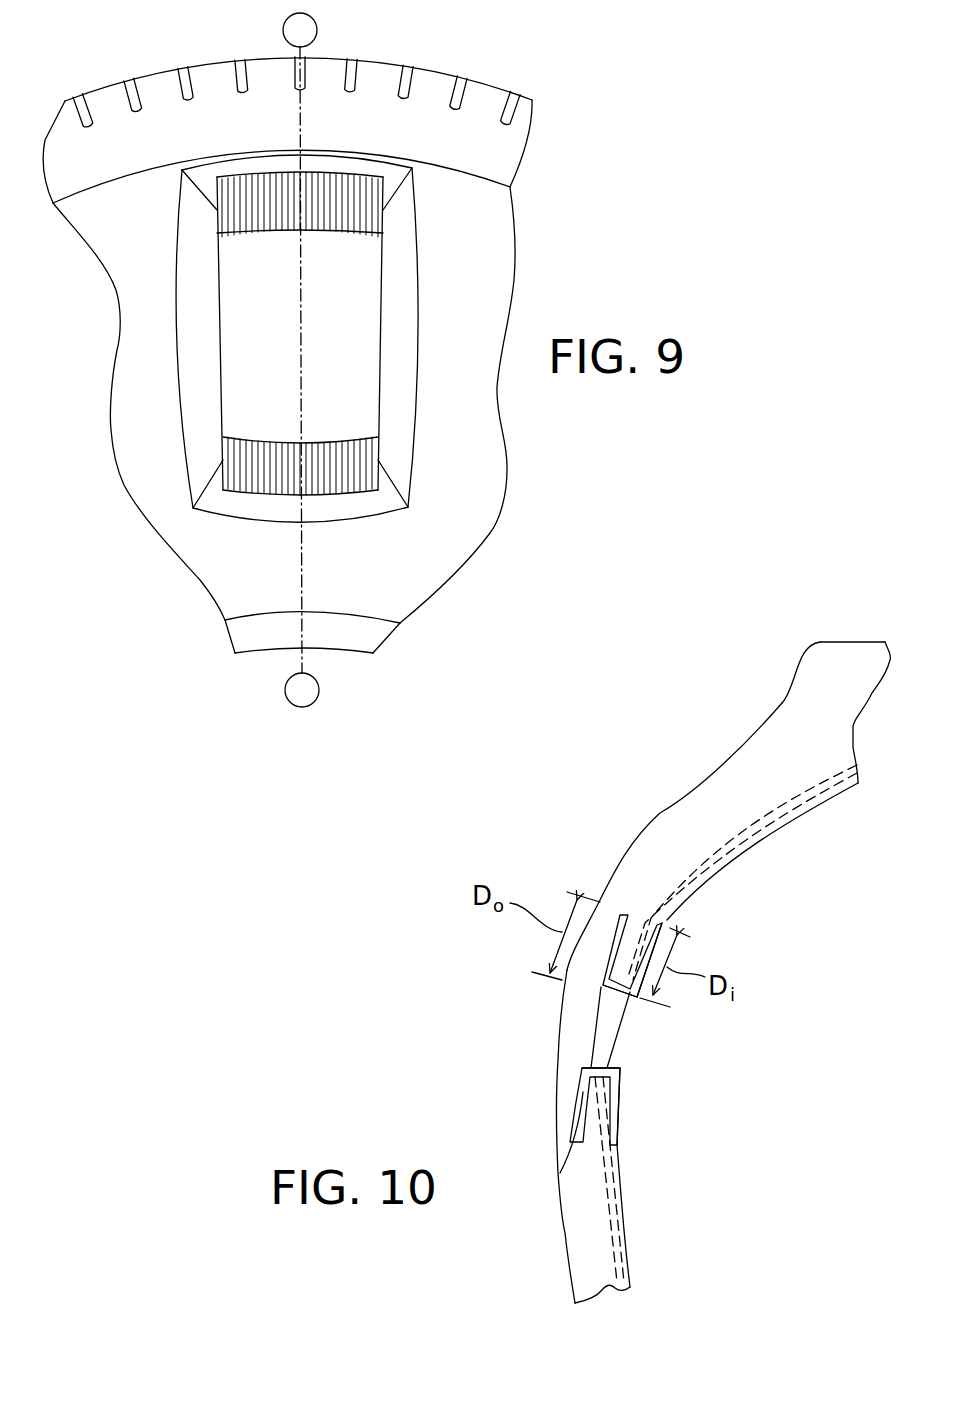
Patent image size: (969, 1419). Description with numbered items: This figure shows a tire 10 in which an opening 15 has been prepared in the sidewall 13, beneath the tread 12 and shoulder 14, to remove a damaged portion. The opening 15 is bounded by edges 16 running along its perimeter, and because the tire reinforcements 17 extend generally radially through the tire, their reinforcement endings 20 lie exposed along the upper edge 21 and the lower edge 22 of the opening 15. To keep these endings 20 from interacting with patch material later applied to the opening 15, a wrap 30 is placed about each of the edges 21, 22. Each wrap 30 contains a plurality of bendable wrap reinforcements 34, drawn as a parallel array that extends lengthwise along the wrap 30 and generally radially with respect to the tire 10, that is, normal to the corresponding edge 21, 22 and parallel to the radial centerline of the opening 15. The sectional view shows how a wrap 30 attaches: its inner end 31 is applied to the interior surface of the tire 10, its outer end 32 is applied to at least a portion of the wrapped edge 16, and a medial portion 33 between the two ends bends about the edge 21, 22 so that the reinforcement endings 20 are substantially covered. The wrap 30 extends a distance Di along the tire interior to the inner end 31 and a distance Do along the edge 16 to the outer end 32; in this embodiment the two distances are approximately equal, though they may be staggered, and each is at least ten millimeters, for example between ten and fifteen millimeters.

In FIG. 9, the tire 10 is at (83, 72).
In FIG. 10, the tire 10 is at (650, 767).
In FIG. 9, the tread 12 is at (223, 68).
In FIG. 10, the tread 12 is at (850, 641).
In FIG. 9, the sidewall 13 is at (145, 345).
In FIG. 9, the shoulder 14 is at (485, 154).
In FIG. 10, the shoulder 14 is at (782, 700).
In FIG. 9, the opening 15 is at (252, 373).
In FIG. 10, the opening 15 is at (587, 1030).
In FIG. 9, the edge 16 is at (177, 283).
In FIG. 10, the tire reinforcements 17 is at (785, 818).
In FIG. 10, the reinforcement endings 20 is at (612, 1063).
In FIG. 9, the upper edge 21 is at (383, 157).
In FIG. 9, the lower edge 22 is at (383, 515).
In FIG. 9, the wrap 30 is at (383, 183).
In FIG. 10, the wrap 30 is at (603, 984).
In FIG. 10, the inner end 31 is at (668, 921).
In FIG. 10, the outer end 32 is at (621, 915).
In FIG. 10, the medial portion 33 is at (595, 1060).
In FIG. 9, the wrap reinforcements 34 is at (257, 187).